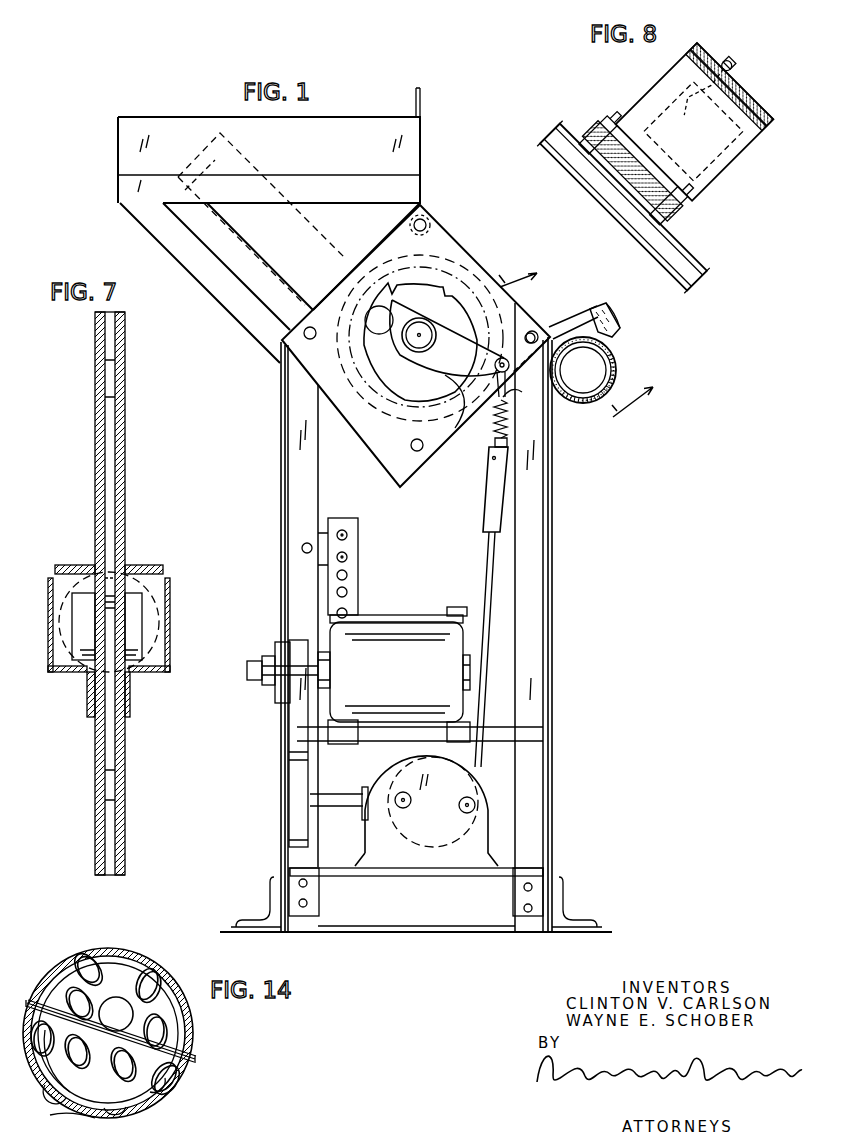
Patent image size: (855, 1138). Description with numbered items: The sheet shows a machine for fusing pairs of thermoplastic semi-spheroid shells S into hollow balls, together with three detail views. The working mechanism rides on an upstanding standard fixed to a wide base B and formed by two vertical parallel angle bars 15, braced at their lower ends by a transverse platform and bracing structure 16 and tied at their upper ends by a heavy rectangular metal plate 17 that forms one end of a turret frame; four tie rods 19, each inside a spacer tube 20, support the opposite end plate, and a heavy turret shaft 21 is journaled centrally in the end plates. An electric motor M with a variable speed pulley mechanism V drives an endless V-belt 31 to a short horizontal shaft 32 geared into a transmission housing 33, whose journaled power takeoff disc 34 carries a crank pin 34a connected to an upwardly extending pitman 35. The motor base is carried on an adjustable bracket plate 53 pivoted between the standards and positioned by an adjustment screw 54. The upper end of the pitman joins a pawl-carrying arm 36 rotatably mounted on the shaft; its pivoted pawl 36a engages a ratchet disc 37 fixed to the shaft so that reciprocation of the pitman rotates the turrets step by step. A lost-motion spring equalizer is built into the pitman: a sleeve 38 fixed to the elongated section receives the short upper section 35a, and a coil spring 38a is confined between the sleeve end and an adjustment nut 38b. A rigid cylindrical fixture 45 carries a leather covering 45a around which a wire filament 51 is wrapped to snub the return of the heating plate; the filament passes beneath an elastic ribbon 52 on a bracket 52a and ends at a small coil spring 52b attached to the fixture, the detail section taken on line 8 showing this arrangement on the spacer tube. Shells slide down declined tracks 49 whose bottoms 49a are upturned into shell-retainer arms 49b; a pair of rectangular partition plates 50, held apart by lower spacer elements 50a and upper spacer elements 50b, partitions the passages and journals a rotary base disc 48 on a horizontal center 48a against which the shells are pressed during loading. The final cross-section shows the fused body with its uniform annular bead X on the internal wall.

In FIG. 1, the section line 8— 8 is at (576, 347).
In FIG. 1, the angle bars 15 is at (298, 603).
In FIG. 1, the platform and bracing structure 16 is at (463, 877).
In FIG. 1, the rectangular metal plate 17 is at (455, 255).
In FIG. 1, the tie rods 19 is at (425, 221).
In FIG. 8, the spacer tubes 20 is at (680, 257).
In FIG. 1, the turret shaft 21 is at (419, 332).
In FIG. 1, the V-belt 31 is at (297, 733).
In FIG. 1, the horizontal shaft 32 is at (330, 800).
In FIG. 1, the transmission housing 33 is at (373, 827).
In FIG. 1, the power takeoff disc 34 is at (427, 843).
In FIG. 1, the crank pin 34a is at (472, 806).
In FIG. 1, the pitman 35 is at (487, 655).
In FIG. 1, the short pitman section 35a is at (522, 392).
In FIG. 1, the pawl-carrying arm 36 is at (445, 355).
In FIG. 1, the pawl 36a is at (462, 405).
In FIG. 1, the ratchet disc 37 is at (395, 369).
In FIG. 1, the sleeve 38 is at (488, 487).
In FIG. 1, the coil spring 38a is at (506, 443).
In FIG. 1, the adjustment nut 38b is at (488, 453).
In FIG. 1, the cylindrical fixture 45 is at (600, 375).
In FIG. 8, the cylindrical fixture 45 is at (693, 55).
In FIG. 1, the soft covering 45a is at (614, 375).
In FIG. 8, the soft covering 45a is at (753, 89).
In FIG. 7, the base disc 48 is at (110, 548).
In FIG. 7, the horizontal center 48a is at (118, 587).
In FIG. 1, the declined tracks 49 is at (290, 243).
In FIG. 7, the declined tracks 49 is at (52, 640).
In FIG. 1, the track bottoms 49a is at (305, 282).
In FIG. 7, the track bottoms 49a is at (157, 675).
In FIG. 7, the shell-retainer arms 49b is at (133, 612).
In FIG. 1, the rectangular plates 50 is at (287, 310).
In FIG. 7, the rectangular plates 50 is at (100, 453).
In FIG. 7, the lower spacer elements 50a is at (107, 845).
In FIG. 7, the upper spacer elements 50b is at (108, 338).
In FIG. 1, the wire filament 51 is at (572, 314).
In FIG. 8, the wire filament 51 is at (738, 60).
In FIG. 1, the elastic ribbon 52 is at (603, 313).
In FIG. 8, the elastic ribbon 52 is at (705, 128).
In FIG. 1, the bracket 52a is at (612, 336).
In FIG. 1, the small coil spring 52b is at (562, 418).
In FIG. 1, the adjustable bracket plate 53 is at (352, 604).
In FIG. 1, the adjustment screw 54 is at (345, 557).
In FIG. 1, the electric motor M is at (448, 698).
In FIG. 1, the variable speed pulley mechanism V is at (288, 660).
In FIG. 1, the base B is at (582, 925).
In FIG. 14, the shells S is at (182, 1025).
In FIG. 14, the annular bead X is at (62, 975).